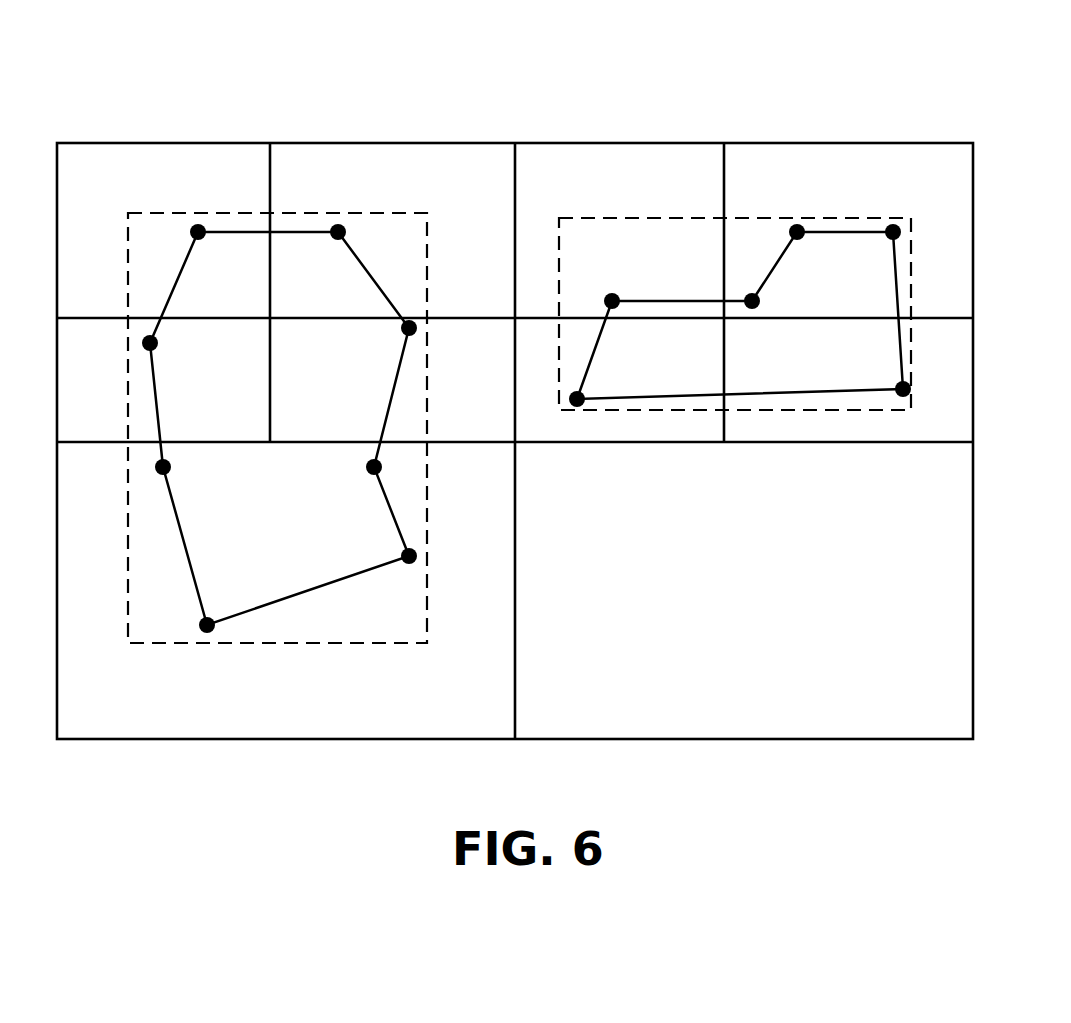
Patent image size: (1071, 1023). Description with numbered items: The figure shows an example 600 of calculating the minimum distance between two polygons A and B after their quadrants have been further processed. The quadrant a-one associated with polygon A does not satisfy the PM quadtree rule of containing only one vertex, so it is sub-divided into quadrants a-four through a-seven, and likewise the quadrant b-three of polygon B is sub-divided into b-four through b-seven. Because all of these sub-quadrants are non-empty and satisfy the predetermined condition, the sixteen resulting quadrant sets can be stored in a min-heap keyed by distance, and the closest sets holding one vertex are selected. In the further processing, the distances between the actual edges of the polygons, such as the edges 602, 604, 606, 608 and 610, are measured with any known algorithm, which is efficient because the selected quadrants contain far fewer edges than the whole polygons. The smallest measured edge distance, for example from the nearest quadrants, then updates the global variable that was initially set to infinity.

The spatial grid index diagram 600 is at (518, 61).
The polygonal edge 602 is at (393, 405).
The polygonal edge 604 is at (650, 405).
The polygonal edge 606 is at (583, 378).
The polygonal edge 608 is at (307, 230).
The polygonal edge 610 is at (677, 300).